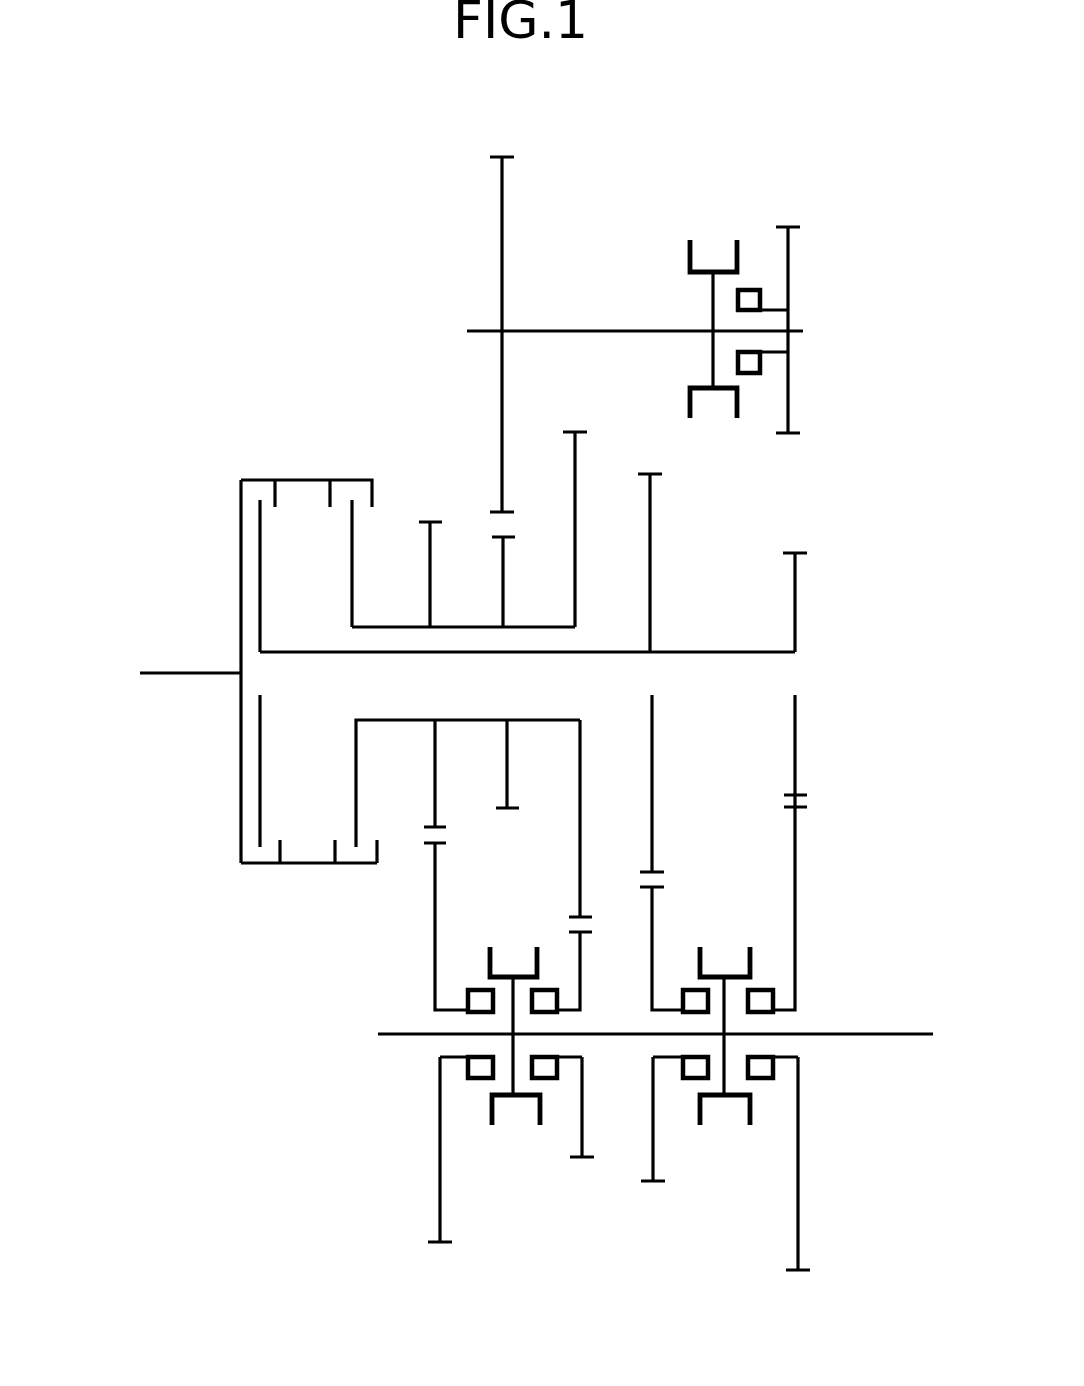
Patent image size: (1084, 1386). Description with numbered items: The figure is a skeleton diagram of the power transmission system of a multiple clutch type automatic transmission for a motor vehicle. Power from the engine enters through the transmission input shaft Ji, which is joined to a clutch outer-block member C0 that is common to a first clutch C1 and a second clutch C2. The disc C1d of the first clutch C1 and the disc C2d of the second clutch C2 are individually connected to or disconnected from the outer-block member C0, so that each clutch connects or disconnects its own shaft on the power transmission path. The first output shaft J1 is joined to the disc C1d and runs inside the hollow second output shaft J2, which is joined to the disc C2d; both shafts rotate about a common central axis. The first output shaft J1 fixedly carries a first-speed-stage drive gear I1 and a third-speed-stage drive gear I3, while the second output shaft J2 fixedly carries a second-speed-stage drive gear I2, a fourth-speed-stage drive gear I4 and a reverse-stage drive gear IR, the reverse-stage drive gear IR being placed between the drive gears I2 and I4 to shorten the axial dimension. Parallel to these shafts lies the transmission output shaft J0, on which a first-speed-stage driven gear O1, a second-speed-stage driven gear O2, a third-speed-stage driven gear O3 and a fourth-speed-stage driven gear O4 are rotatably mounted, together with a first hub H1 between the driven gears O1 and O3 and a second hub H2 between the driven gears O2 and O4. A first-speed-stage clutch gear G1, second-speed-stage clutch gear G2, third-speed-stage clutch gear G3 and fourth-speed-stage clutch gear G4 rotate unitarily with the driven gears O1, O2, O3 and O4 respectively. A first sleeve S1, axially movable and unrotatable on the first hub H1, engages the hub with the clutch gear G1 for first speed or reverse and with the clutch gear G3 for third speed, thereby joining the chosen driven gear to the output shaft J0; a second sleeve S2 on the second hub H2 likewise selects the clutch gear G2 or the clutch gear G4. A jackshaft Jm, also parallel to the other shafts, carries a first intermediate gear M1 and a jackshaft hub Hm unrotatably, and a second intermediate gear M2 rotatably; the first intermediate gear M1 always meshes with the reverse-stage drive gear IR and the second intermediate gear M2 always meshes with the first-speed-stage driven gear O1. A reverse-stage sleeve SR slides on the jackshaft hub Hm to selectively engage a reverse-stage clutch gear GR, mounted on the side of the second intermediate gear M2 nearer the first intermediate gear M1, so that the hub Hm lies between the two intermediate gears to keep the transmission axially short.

The first intermediate gear M1 is at (503, 195).
The second intermediate gear M2 is at (790, 258).
The jackshaft Jm is at (800, 331).
The reverse-stage sleeve SR is at (698, 250).
The jackshaft hub Hm is at (710, 303).
The reverse-stage clutch gear GR is at (750, 288).
The reverse-stage drive gear IR is at (500, 560).
The second-speed-stage drive gear I2 is at (430, 565).
The fourth-speed-stage drive gear I4 is at (578, 478).
The third-speed-stage drive gear I3 is at (648, 530).
The first-speed-stage drive gear I1 is at (797, 607).
The second output shaft J2 is at (385, 627).
The first output shaft J1 is at (710, 652).
The transmission input shaft Ji is at (170, 673).
The disc of first clutch C1d is at (260, 768).
The first clutch C1 is at (238, 874).
The clutch outer-block member C0 is at (290, 866).
The second clutch C2 is at (355, 875).
The disc of second clutch C2d is at (357, 783).
The second-speed-stage clutch gear G2 is at (472, 988).
The fourth-speed-stage clutch gear G4 is at (550, 988).
The third-speed-stage clutch gear G3 is at (687, 988).
The first-speed-stage clutch gear G1 is at (765, 988).
The second sleeve S2 is at (522, 1103).
The first sleeve S1 is at (735, 1110).
The second hub H2 is at (512, 1063).
The first hub H1 is at (727, 1080).
The transmission output shaft J0 is at (873, 1034).
The second-speed-stage driven gear O2 is at (440, 1177).
The fourth-speed-stage driven gear O4 is at (585, 1130).
The third-speed-stage driven gear O3 is at (660, 1147).
The first-speed-stage driven gear O1 is at (800, 1180).